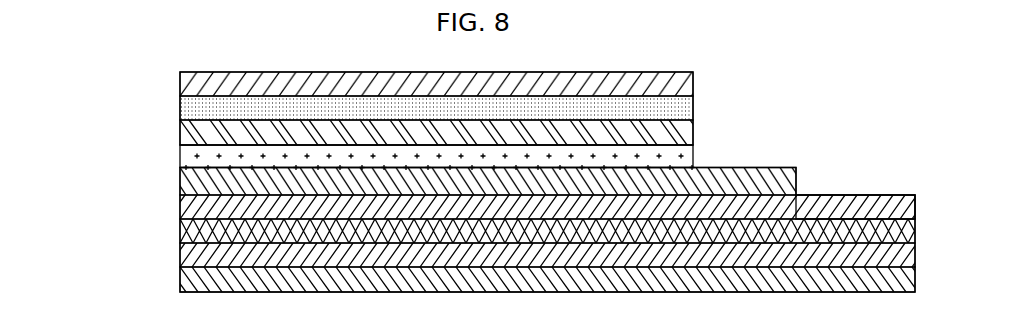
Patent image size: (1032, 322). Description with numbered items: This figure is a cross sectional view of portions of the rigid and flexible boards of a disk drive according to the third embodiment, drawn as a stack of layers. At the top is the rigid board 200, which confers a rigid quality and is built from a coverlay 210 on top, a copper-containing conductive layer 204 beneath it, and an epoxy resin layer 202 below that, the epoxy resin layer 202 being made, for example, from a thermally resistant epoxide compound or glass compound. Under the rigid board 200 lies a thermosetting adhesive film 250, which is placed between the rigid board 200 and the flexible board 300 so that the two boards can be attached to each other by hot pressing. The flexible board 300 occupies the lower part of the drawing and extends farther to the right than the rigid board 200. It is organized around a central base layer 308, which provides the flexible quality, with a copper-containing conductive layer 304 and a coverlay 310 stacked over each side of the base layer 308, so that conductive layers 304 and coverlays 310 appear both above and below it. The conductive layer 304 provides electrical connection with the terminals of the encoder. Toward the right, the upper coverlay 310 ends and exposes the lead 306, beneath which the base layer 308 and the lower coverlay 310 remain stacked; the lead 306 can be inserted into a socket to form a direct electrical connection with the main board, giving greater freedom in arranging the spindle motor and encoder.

The rigid board 200 is at (83, 72).
The coverlay 210 is at (181, 83).
The conductive layer 204 is at (181, 104).
The epoxy resin layer 202 is at (181, 129).
The thermosetting adhesive film 250 is at (181, 156).
The flexible board 300 is at (85, 173).
The coverlay 310 is at (181, 178).
The conductive layer 304 is at (181, 201).
The base layer 308 is at (181, 229).
The lead 306 is at (868, 207).